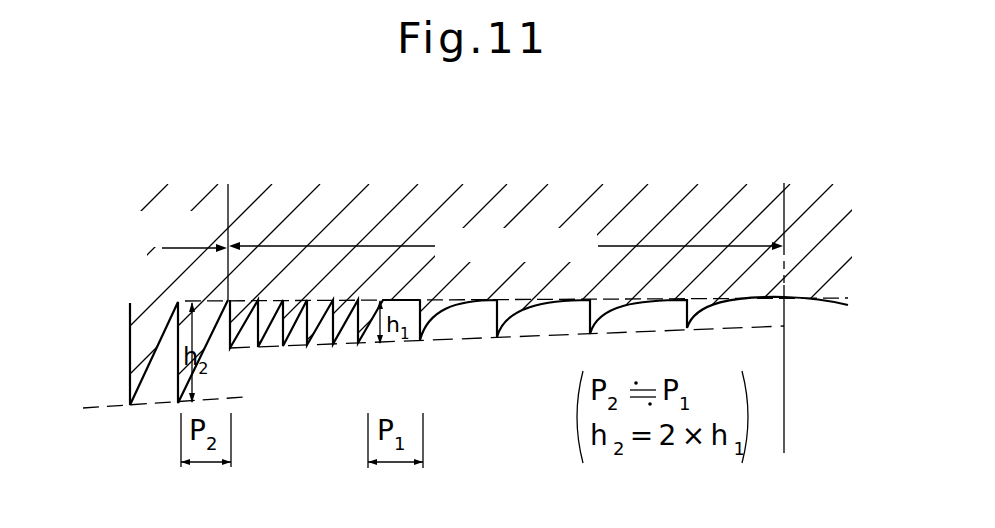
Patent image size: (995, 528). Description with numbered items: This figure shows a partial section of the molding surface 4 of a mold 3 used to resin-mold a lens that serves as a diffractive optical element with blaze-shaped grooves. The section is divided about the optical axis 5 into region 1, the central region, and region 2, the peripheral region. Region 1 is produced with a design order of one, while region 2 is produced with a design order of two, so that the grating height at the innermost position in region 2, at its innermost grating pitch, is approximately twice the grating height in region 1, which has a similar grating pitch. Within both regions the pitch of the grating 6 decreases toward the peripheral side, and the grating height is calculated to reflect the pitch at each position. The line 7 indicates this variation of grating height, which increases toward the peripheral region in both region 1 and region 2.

The region 1 is at (506, 246).
The region 2 is at (151, 242).
The mold 3 is at (538, 194).
The molding surface 4 is at (540, 322).
The optical axis 5 is at (784, 400).
The grating 6 is at (142, 346).
The line indicating variation of grating height 7 is at (107, 408).